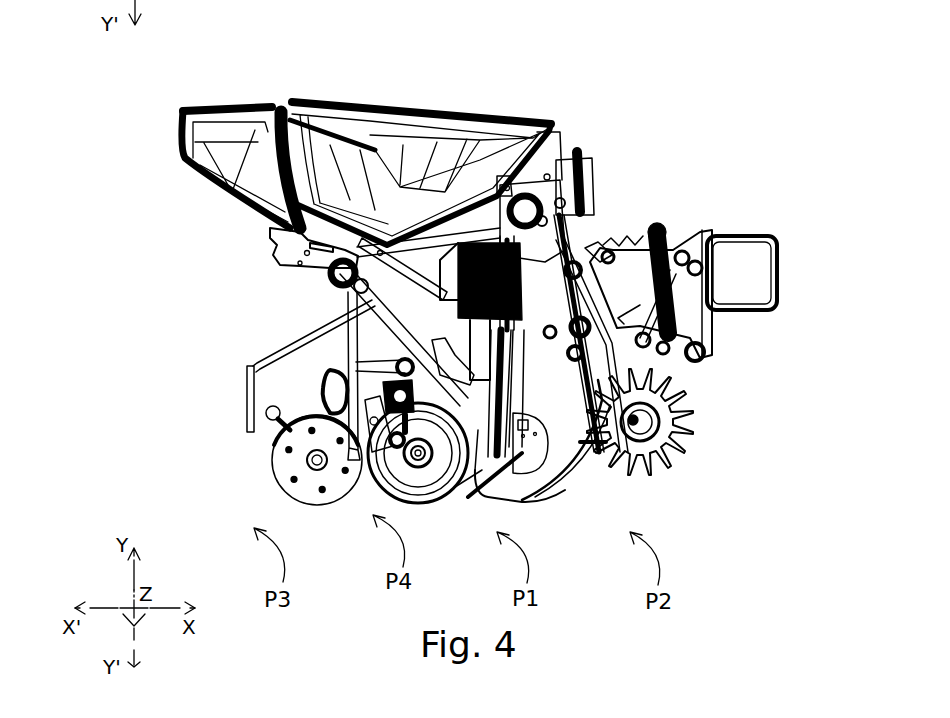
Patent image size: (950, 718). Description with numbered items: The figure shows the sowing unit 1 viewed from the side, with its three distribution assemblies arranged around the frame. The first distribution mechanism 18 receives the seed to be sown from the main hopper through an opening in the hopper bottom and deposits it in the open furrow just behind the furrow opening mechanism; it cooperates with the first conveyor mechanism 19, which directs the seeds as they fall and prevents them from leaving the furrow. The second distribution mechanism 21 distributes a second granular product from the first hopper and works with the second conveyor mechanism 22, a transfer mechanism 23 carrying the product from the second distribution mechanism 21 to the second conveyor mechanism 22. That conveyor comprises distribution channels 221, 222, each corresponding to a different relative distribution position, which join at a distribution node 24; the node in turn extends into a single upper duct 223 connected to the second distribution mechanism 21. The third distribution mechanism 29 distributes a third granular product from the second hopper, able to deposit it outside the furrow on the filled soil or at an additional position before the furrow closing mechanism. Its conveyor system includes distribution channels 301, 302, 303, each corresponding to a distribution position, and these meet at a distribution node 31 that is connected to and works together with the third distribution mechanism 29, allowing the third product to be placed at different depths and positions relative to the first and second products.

The sowing unit 1 is at (626, 66).
The first distribution mechanism 18 is at (424, 245).
The first conveyor mechanism 19 is at (443, 495).
The second distribution mechanism 21 is at (586, 158).
The second conveyor mechanism 22 is at (703, 335).
The transfer mechanism 23 is at (548, 212).
The distribution node 24 is at (612, 252).
The third distribution mechanism 29 is at (291, 281).
The distribution node 31 is at (350, 300).
The distribution channel 221 is at (672, 396).
The distribution channel 222 is at (557, 492).
The single upper duct 223 is at (577, 250).
The distribution channel 301 is at (262, 350).
The distribution channel 302 is at (352, 468).
The distribution channel 303 is at (243, 407).